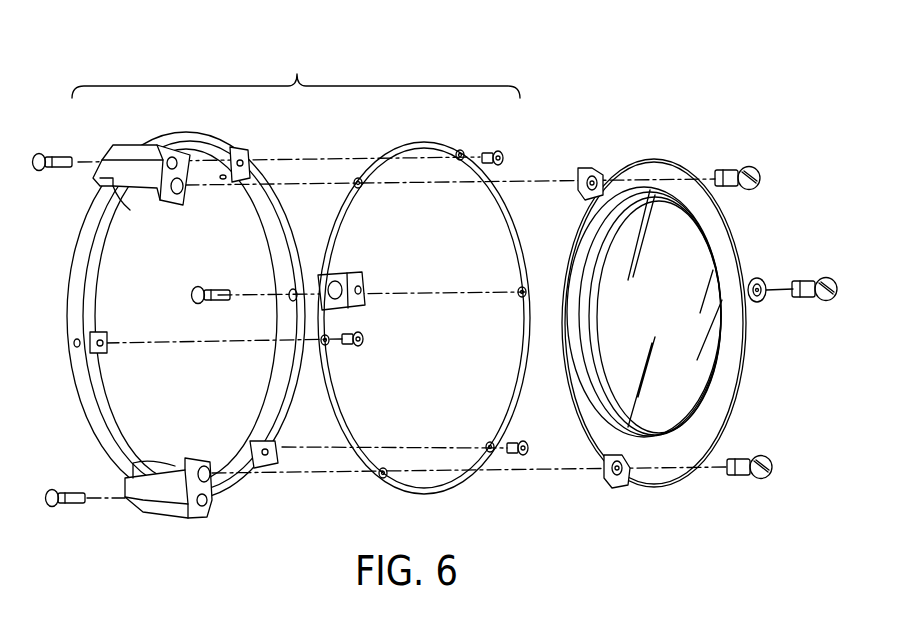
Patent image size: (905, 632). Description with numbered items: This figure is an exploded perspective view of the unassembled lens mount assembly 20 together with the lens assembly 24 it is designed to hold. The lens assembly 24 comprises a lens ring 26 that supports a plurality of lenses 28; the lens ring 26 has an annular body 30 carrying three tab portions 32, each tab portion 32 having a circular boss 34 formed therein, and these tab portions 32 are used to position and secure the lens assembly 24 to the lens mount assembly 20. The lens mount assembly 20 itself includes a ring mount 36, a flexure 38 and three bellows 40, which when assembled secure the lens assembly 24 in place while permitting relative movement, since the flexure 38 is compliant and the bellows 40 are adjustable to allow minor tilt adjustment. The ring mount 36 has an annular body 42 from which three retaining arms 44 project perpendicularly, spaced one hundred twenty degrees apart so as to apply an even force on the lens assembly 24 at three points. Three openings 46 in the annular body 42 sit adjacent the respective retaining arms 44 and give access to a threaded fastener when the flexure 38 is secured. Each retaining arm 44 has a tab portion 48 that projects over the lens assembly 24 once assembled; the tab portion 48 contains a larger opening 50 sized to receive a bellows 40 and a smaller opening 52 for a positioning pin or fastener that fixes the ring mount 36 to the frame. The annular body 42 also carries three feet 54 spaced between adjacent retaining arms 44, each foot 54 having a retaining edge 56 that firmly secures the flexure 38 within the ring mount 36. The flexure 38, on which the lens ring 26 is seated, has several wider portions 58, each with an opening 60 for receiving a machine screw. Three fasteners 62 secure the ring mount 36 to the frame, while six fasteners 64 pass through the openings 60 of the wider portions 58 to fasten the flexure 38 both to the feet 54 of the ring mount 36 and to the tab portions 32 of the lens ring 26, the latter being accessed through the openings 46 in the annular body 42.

The lens mount assembly 20 is at (297, 72).
The lens assembly 24 is at (691, 298).
The lens ring 26 is at (691, 336).
The lenses 28 is at (646, 430).
The annular body 30 is at (730, 228).
The tab portion 32 is at (582, 172).
The circular boss 34 is at (594, 176).
The ring mount 36 is at (154, 316).
The flexure 38 is at (440, 490).
The bellows 40 is at (736, 168).
The annular body 42 is at (72, 300).
The retaining arm 44 is at (122, 150).
The opening 46 is at (96, 178).
The tab portion 48 is at (166, 198).
The larger opening 50 is at (182, 190).
The smaller opening 52 is at (170, 156).
The foot 54 is at (88, 345).
The retaining edge 56 is at (240, 148).
The wider portion 58 is at (360, 190).
The opening 60 is at (358, 178).
The fastener 62 is at (56, 154).
The fastener 64 is at (496, 150).